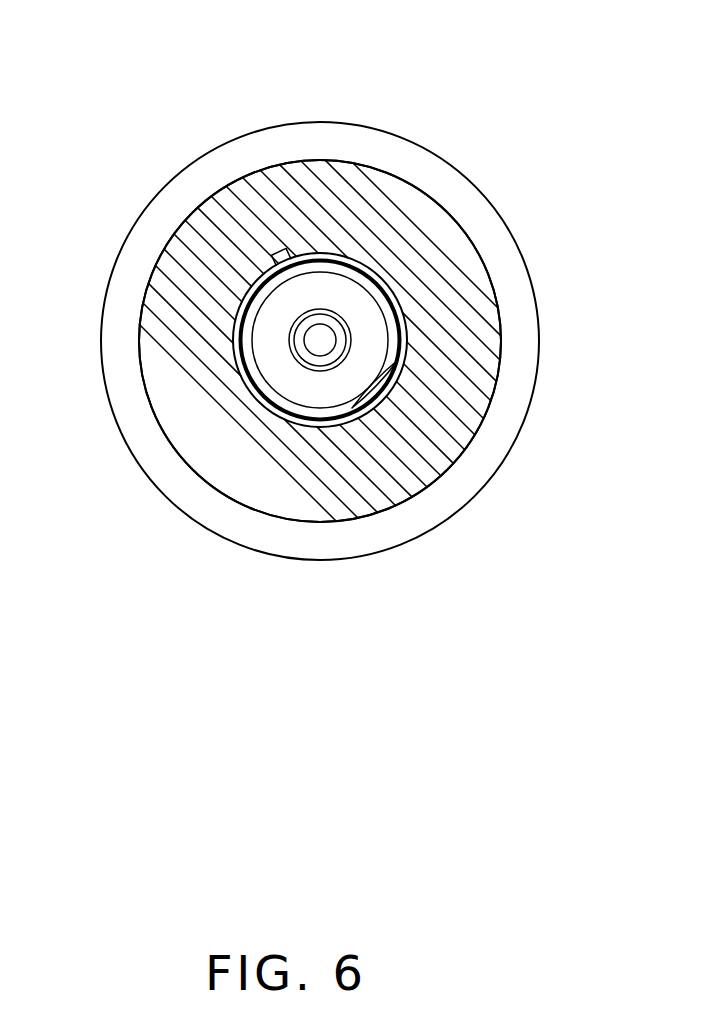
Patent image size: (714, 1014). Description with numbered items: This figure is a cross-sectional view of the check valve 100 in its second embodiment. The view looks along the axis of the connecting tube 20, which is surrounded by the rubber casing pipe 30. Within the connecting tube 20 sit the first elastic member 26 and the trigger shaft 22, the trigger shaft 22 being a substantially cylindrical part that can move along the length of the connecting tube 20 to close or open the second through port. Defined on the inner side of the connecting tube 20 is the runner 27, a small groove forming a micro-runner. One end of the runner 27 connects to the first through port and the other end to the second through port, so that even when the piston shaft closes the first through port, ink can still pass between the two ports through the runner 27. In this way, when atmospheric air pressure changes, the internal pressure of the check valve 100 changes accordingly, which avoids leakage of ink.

The check valve 100 is at (505, 97).
The rubber casing pipe 30 is at (520, 335).
The connecting tube 20 is at (462, 417).
The trigger shaft 22 is at (187, 253).
The first elastic member 26 is at (267, 340).
The runner 27 is at (282, 257).